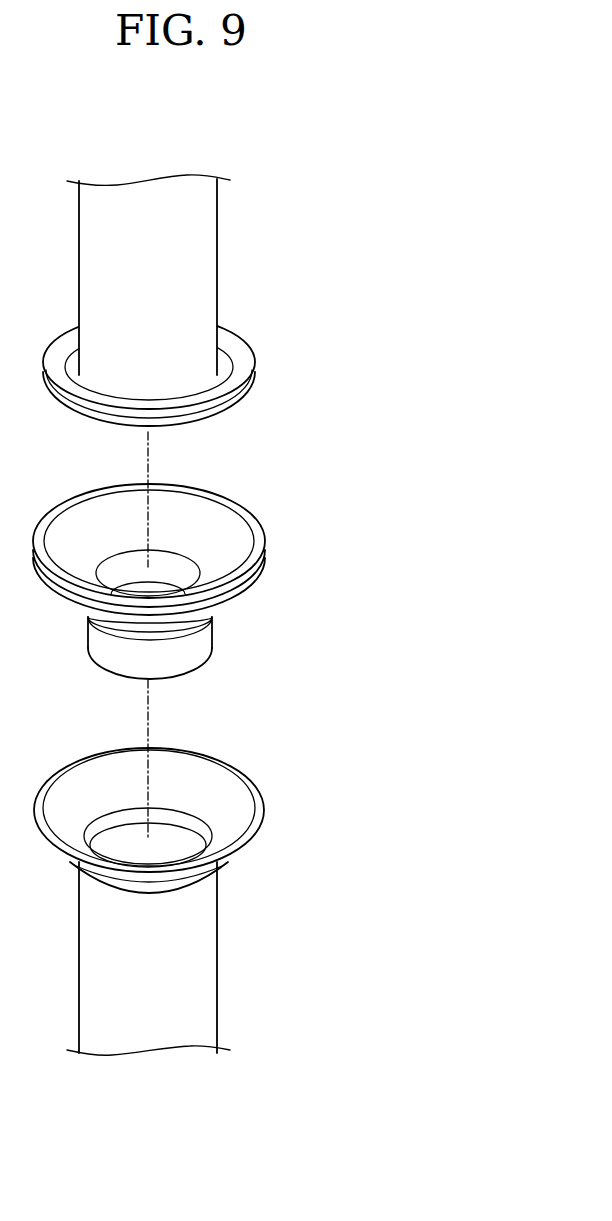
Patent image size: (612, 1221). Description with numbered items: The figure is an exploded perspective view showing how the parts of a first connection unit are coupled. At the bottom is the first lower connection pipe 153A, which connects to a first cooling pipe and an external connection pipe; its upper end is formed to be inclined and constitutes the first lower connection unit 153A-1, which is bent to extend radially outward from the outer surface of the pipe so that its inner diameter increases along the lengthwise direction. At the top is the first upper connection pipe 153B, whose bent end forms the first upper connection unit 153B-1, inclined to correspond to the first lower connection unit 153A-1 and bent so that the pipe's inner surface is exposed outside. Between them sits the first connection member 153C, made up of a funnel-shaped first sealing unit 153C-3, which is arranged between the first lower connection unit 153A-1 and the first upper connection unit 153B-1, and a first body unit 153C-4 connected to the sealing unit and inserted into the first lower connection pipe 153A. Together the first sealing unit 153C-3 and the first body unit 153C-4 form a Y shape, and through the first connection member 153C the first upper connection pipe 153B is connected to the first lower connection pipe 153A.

The first upper connection pipe 153B is at (208, 277).
The first upper connection unit 153B-1 is at (250, 368).
The first connection member 153C is at (245, 581).
The first sealing unit 153C-3 is at (187, 620).
The first body unit 153C-4 is at (200, 651).
The first lower connection unit 153A-1 is at (183, 882).
The first lower connection pipe 153A is at (200, 951).